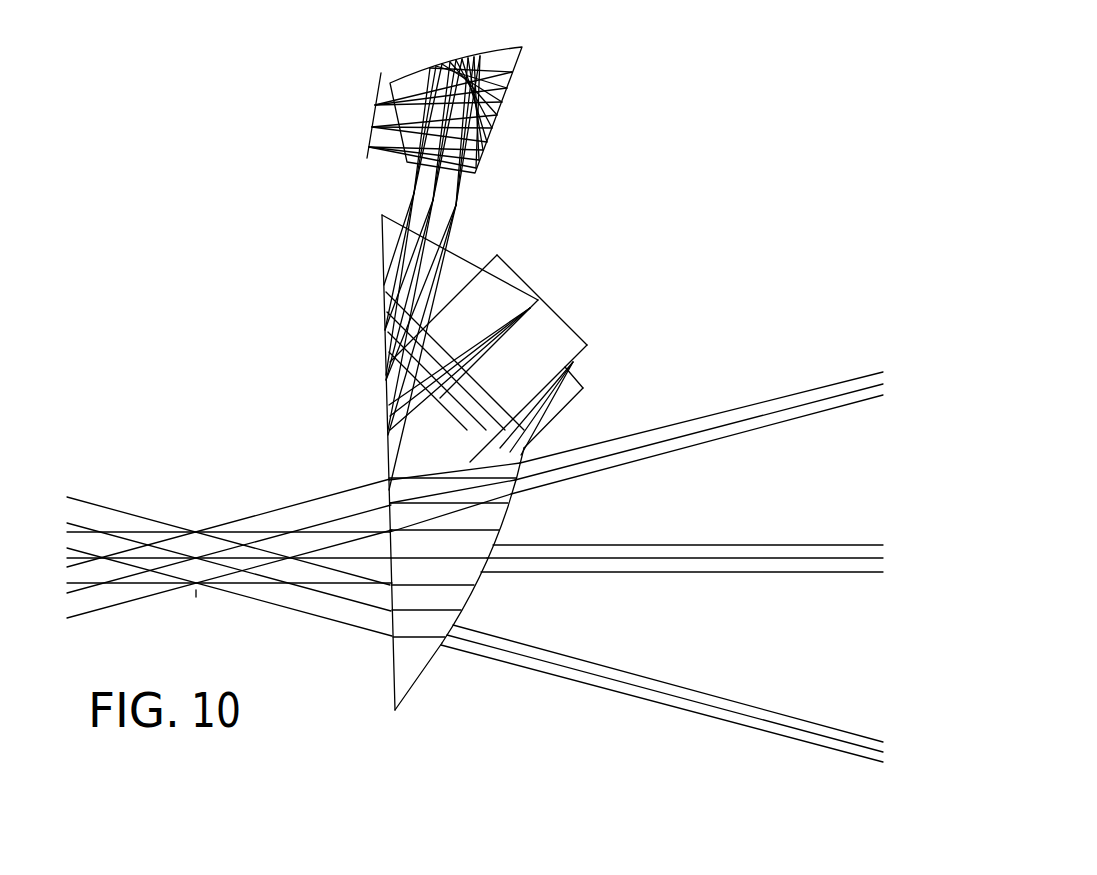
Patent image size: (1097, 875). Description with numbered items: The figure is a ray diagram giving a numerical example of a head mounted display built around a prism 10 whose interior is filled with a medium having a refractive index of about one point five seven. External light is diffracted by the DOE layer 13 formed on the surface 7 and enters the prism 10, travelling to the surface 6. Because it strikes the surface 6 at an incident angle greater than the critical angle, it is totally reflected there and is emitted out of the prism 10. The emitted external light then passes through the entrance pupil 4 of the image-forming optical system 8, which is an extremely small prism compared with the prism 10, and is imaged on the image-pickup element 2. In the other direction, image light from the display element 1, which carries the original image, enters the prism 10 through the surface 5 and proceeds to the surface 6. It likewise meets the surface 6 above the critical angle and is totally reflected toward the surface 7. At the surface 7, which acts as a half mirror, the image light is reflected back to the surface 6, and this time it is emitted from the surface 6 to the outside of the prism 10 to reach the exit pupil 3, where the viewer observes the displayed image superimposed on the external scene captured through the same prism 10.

The display element 1 is at (560, 320).
The image-pickup element 2 is at (378, 90).
The exit pupil 3 is at (200, 526).
The entrance pupil 4 is at (415, 188).
The surface 5 is at (459, 256).
The surface 6 is at (463, 451).
The surface 7 is at (506, 545).
The image-forming optical system 8 is at (507, 82).
The prism 10 is at (563, 393).
The DOE layer 13 is at (506, 545).